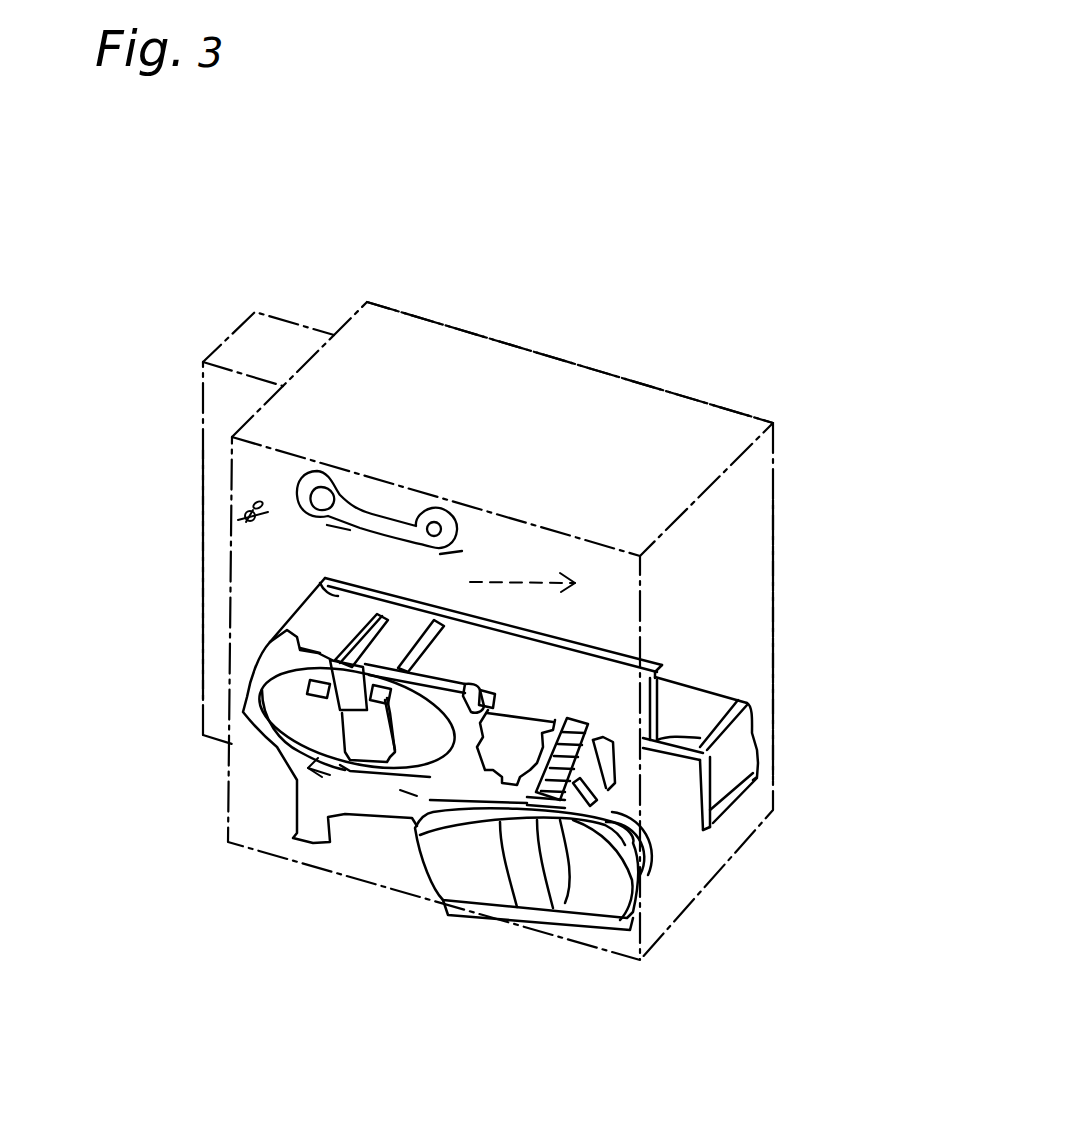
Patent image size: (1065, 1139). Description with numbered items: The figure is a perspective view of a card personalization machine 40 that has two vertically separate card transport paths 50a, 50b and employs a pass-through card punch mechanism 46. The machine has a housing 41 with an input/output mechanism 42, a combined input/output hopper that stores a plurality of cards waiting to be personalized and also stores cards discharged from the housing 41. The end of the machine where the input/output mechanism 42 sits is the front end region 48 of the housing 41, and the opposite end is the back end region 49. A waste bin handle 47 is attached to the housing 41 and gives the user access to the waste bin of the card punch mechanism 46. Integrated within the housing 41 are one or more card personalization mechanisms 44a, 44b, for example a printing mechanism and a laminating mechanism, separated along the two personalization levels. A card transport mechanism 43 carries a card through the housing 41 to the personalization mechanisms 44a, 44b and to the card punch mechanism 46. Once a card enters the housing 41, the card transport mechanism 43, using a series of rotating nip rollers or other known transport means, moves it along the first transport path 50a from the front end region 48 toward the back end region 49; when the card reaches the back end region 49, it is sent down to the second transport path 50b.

The card personalization machine 40 is at (585, 305).
The housing 41 is at (437, 333).
The input/output mechanism 42 is at (195, 330).
The card transport mechanism 43 is at (245, 520).
The card personalization mechanism 44a is at (363, 470).
The card personalization mechanism 44b is at (258, 762).
The card punch mechanism 46 is at (607, 783).
The waste bin handle 47 is at (485, 893).
The front end region 48 is at (153, 507).
The back end region 49 is at (820, 626).
The first card transport path 50a is at (438, 555).
The second card transport path 50b is at (371, 781).